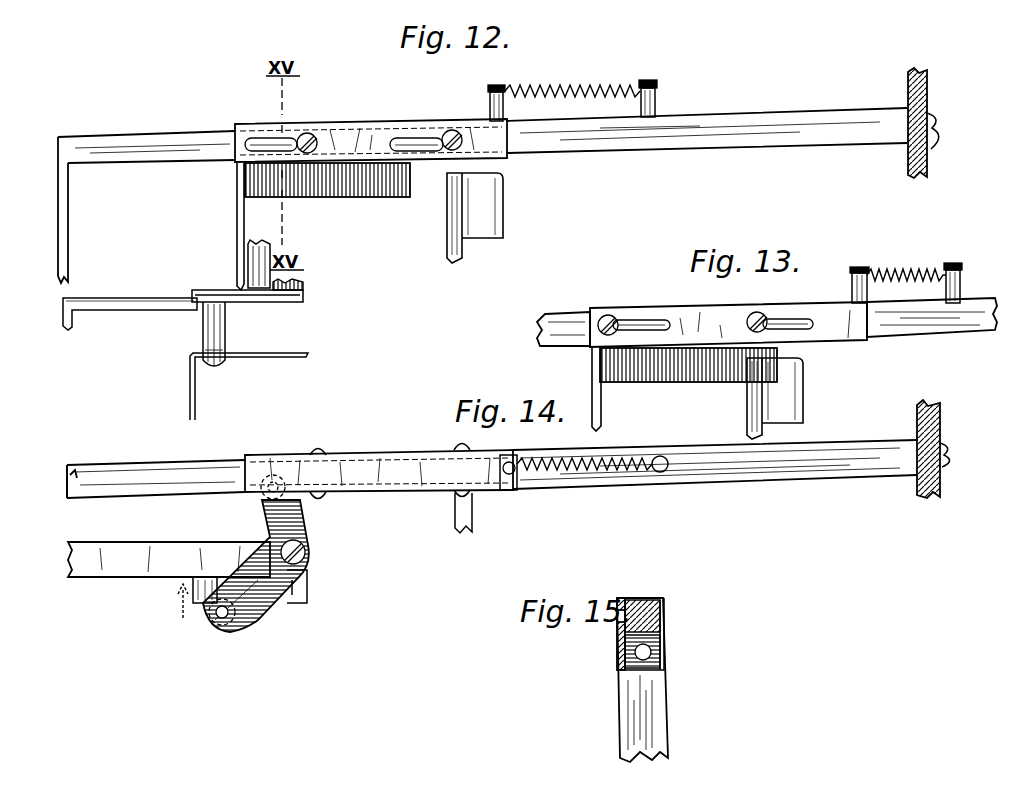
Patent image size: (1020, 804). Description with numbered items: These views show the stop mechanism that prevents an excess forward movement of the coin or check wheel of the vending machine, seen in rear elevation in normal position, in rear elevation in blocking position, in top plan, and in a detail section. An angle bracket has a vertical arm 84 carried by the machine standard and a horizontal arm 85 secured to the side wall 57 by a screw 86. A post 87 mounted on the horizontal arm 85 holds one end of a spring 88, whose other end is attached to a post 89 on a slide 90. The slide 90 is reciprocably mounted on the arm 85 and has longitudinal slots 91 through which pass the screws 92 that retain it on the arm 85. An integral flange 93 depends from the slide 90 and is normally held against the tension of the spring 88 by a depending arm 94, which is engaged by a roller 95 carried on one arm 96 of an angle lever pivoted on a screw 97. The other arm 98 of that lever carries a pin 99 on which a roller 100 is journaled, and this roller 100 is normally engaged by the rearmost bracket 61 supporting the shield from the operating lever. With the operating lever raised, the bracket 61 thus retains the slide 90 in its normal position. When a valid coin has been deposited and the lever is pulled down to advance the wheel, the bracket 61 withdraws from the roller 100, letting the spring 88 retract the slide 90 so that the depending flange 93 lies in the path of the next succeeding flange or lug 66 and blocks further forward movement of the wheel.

In FIG. 12, the side wall 57 is at (908, 80).
In FIG. 14, the side wall 57 is at (940, 418).
In FIG. 12, the rearmost bracket 61 is at (285, 358).
In FIG. 14, the rearmost bracket 61 is at (305, 600).
In FIG. 12, the flange or lug 66 is at (485, 203).
In FIG. 13, the flange or lug 66 is at (795, 401).
In FIG. 12, the vertical arm 84 is at (58, 238).
In FIG. 14, the vertical arm 84 is at (65, 498).
In FIG. 12, the horizontal arm 85 is at (716, 142).
In FIG. 13, the horizontal arm 85 is at (918, 332).
In FIG. 14, the horizontal arm 85 is at (731, 470).
In FIG. 12, the screw 86 is at (937, 137).
In FIG. 14, the screw 86 is at (950, 460).
In FIG. 12, the post 87 is at (658, 92).
In FIG. 13, the post 87 is at (950, 265).
In FIG. 14, the post 87 is at (657, 473).
In FIG. 12, the spring 88 is at (578, 86).
In FIG. 13, the spring 88 is at (893, 268).
In FIG. 14, the spring 88 is at (598, 472).
In FIG. 12, the post 89 is at (492, 90).
In FIG. 13, the post 89 is at (851, 292).
In FIG. 14, the post 89 is at (505, 482).
In FIG. 12, the slide 90 is at (348, 124).
In FIG. 13, the slide 90 is at (676, 309).
In FIG. 14, the slide 90 is at (370, 452).
In FIG. 15, the slide 90 is at (648, 600).
In FIG. 12, the longitudinal slots 91 is at (256, 136).
In FIG. 13, the longitudinal slots 91 is at (622, 320).
In FIG. 15, the longitudinal slots 91 is at (665, 620).
In FIG. 12, the screws 92 is at (310, 134).
In FIG. 13, the screws 92 is at (604, 334).
In FIG. 14, the screws 92 is at (312, 447).
In FIG. 12, the integral flange 93 is at (350, 197).
In FIG. 13, the integral flange 93 is at (692, 383).
In FIG. 15, the integral flange 93 is at (620, 658).
In FIG. 12, the depending arm 94 is at (237, 228).
In FIG. 13, the depending arm 94 is at (603, 410).
In FIG. 14, the depending arm 94 is at (463, 513).
In FIG. 15, the depending arm 94 is at (667, 705).
In FIG. 12, the roller 95 is at (262, 270).
In FIG. 14, the roller 95 is at (270, 502).
In FIG. 14, the arm of angle lever 96 is at (300, 522).
In FIG. 12, the screw 97 is at (300, 286).
In FIG. 14, the screw 97 is at (310, 563).
In FIG. 12, the arm of angle lever 98 is at (205, 290).
In FIG. 14, the arm of angle lever 98 is at (262, 600).
In FIG. 14, the pin 99 is at (220, 620).
In FIG. 12, the roller 100 is at (226, 330).
In FIG. 14, the roller 100 is at (213, 617).